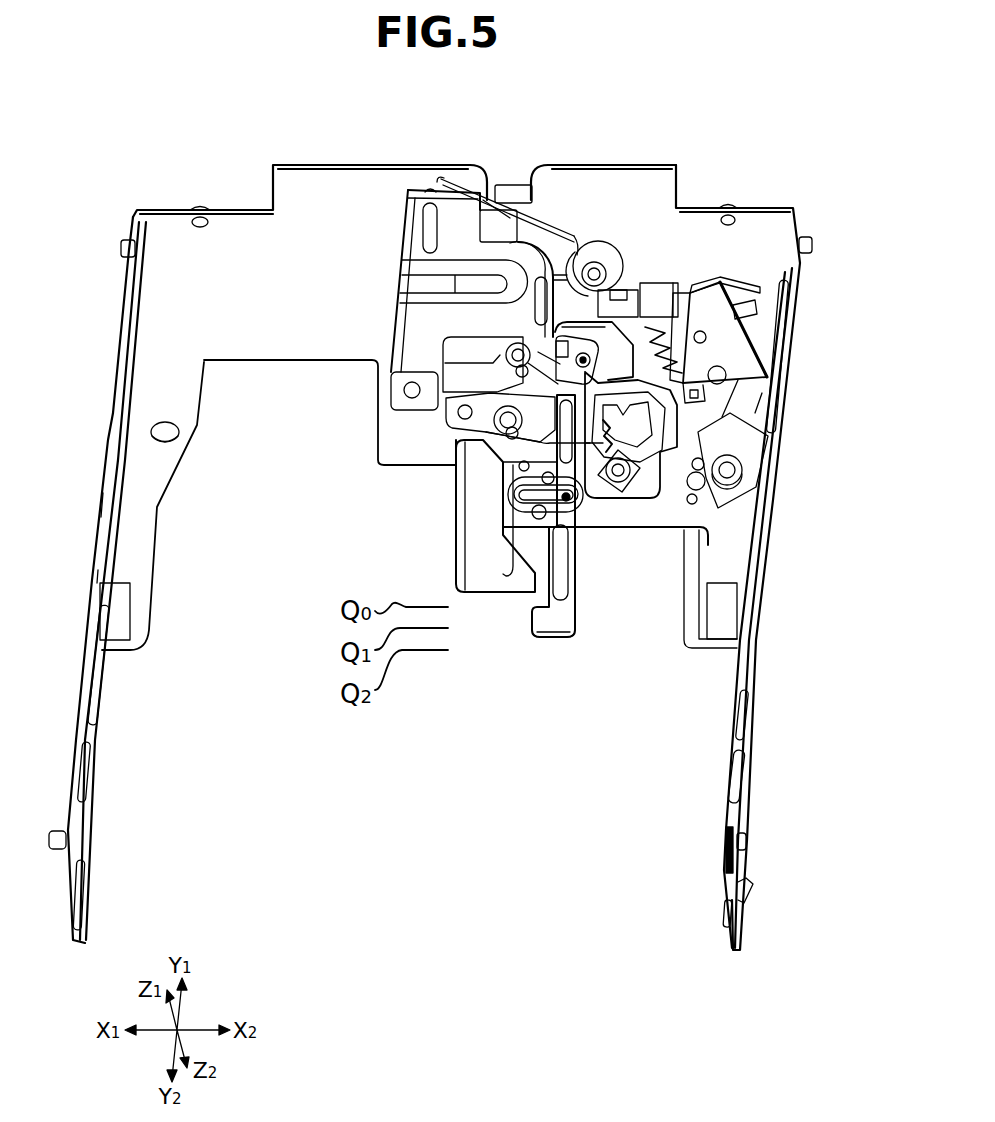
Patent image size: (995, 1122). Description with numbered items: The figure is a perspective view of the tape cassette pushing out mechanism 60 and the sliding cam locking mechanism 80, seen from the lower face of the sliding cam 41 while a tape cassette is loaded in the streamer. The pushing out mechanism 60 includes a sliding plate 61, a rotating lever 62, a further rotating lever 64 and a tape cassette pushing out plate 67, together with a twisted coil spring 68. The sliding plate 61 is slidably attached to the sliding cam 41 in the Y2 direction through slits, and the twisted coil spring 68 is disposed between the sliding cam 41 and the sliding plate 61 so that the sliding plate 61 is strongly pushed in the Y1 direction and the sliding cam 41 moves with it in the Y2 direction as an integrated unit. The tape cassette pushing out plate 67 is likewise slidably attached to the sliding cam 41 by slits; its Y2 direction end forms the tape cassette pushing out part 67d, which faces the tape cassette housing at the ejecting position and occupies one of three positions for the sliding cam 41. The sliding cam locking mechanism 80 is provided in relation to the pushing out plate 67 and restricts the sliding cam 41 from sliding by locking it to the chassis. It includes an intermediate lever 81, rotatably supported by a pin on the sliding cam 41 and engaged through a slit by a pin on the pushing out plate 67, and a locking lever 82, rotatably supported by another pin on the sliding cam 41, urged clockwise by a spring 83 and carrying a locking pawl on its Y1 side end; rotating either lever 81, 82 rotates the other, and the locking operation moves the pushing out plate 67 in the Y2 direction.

The sliding cam 41 is at (233, 237).
The tape cassette pushing out mechanism 60 is at (388, 237).
The sliding plate 61 is at (396, 340).
The rotating lever 62 is at (456, 381).
The rotating lever 64 is at (452, 430).
The tape cassette pushing out plate 67 is at (559, 524).
The tape cassette pushing out part 67d is at (555, 620).
The twisted coil spring 68 is at (560, 200).
The sliding cam locking mechanism 80 is at (786, 401).
The intermediate lever 81 is at (660, 518).
The locking lever 82 is at (723, 338).
The spring 83 is at (667, 340).